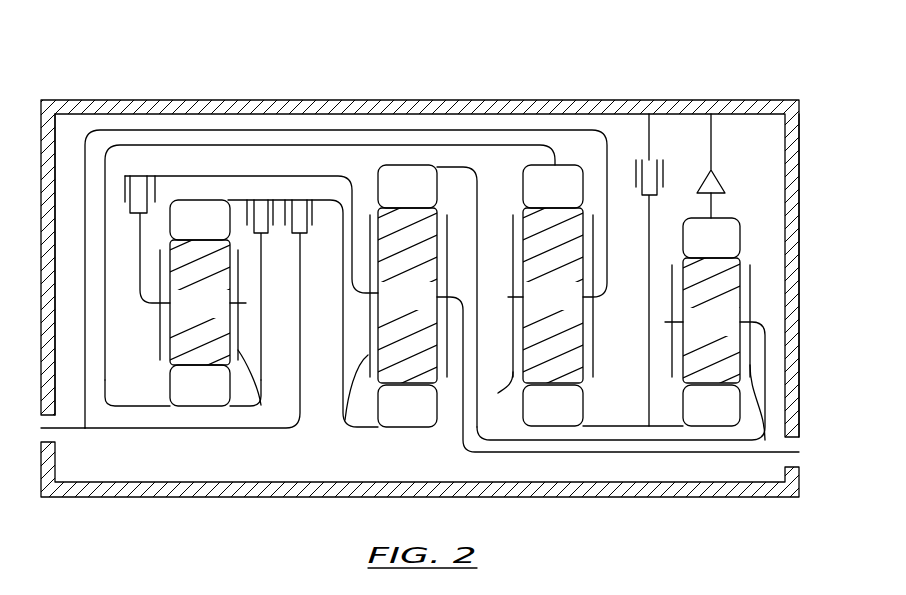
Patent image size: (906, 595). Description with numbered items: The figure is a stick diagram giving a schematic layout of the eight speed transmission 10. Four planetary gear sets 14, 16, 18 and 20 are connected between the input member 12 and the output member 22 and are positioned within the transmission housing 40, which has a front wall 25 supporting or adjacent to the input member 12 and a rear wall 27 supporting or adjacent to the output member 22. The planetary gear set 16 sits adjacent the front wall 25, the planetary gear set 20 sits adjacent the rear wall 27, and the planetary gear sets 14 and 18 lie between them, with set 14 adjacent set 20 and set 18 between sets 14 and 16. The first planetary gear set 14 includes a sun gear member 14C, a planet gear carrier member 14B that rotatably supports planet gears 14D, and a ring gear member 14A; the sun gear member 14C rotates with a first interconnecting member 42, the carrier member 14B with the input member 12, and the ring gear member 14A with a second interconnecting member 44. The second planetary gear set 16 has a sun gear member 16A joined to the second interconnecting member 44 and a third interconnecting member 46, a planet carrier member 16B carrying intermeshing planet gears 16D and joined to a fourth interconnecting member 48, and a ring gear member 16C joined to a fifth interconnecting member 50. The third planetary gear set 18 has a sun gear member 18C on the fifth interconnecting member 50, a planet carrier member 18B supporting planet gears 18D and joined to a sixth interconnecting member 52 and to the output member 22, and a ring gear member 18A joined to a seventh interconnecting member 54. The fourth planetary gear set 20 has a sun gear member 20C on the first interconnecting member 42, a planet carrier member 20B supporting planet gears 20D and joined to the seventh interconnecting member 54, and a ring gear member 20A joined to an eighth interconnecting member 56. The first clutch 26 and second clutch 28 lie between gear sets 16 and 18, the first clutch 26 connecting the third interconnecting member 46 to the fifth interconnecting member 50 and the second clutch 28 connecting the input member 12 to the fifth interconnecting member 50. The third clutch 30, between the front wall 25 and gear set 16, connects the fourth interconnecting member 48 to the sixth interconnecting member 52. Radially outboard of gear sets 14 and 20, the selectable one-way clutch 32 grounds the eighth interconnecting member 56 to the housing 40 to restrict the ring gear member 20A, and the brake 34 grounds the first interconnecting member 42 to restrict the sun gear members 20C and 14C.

The eight speed transmission 10 is at (127, 58).
The input member 12 is at (70, 428).
The first planetary gear set 14 is at (534, 350).
The ring gear member 14A is at (534, 198).
The planet gear carrier member 14B is at (496, 397).
The sun gear member 14C is at (534, 417).
The planet gears 14D is at (534, 308).
The second planetary gear set 16 is at (197, 367).
The sun gear member 16A is at (181, 397).
The planet carrier member 16B is at (255, 410).
The ring gear member 16C is at (181, 232).
The intermeshing planet gears 16D is at (181, 315).
The third planetary gear set 18 is at (385, 350).
The ring gear member 18A is at (388, 198).
The planet carrier member 18B is at (382, 439).
The sun gear member 18C is at (388, 417).
The planet gears 18D is at (388, 308).
The fourth planetary gear set 20 is at (722, 376).
The ring gear member 20A is at (693, 250).
The planet carrier member 20B is at (765, 440).
The sun gear member 20C is at (693, 417).
The planet gears 20D is at (693, 333).
The output member 22 is at (735, 455).
The front wall 25 is at (57, 150).
The first clutch 26 is at (265, 234).
The rear wall 27 is at (783, 147).
The second clutch 28 is at (308, 234).
The third clutch 30 is at (155, 186).
The selectable one-way clutch 32 is at (700, 175).
The brake 34 is at (636, 160).
The transmission housing 40 is at (485, 101).
The first interconnecting member 42 is at (608, 440).
The second interconnecting member 44 is at (290, 143).
The third interconnecting member 46 is at (240, 407).
The fourth interconnecting member 48 is at (157, 307).
The fifth interconnecting member 50 is at (340, 322).
The sixth interconnecting member 52 is at (237, 175).
The seventh interconnecting member 54 is at (448, 167).
The eighth interconnecting member 56 is at (713, 210).